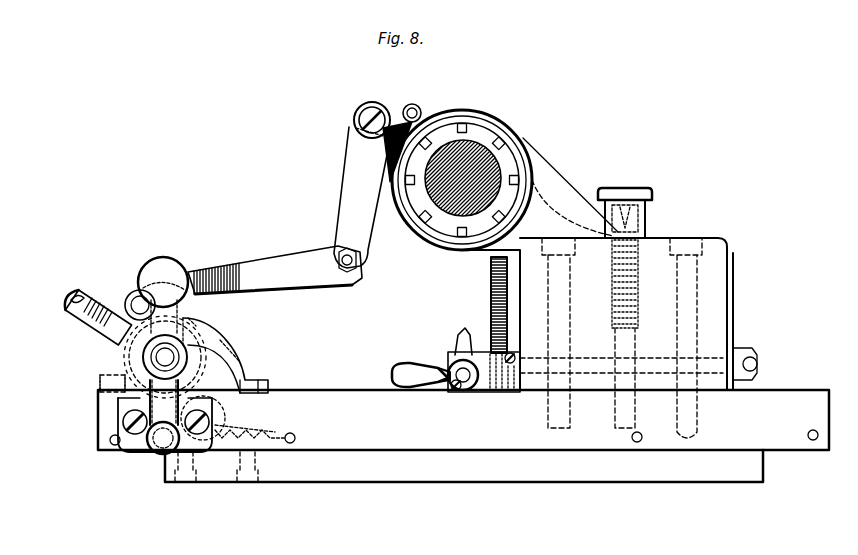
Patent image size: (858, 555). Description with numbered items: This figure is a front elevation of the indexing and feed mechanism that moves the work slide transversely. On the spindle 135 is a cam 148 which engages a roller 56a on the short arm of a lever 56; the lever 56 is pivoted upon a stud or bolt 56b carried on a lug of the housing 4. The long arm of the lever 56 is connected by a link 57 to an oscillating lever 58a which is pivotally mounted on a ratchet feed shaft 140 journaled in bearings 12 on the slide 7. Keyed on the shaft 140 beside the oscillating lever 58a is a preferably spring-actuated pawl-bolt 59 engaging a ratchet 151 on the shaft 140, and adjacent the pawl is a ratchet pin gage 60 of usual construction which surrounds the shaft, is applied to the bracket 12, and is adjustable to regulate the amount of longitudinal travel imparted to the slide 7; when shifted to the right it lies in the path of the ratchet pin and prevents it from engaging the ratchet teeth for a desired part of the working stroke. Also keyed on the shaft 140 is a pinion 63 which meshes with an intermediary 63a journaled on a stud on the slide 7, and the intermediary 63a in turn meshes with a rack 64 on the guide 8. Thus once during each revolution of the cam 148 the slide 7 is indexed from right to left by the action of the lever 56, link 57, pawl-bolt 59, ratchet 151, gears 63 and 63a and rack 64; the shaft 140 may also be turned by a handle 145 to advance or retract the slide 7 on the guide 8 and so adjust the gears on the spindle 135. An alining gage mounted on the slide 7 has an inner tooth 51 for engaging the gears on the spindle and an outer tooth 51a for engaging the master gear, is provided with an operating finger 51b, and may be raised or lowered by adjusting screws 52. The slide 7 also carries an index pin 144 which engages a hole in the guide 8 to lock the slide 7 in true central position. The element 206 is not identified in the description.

The housing 4 is at (527, 146).
The slide 7 is at (463, 420).
The guide 8 is at (462, 484).
The bearings 12 is at (147, 397).
The inner tooth 51 is at (473, 328).
The outer tooth 51a is at (460, 384).
The operating finger 51b is at (407, 367).
The adjusting screws 52 is at (493, 272).
The lever 56 is at (352, 185).
The roller 56a is at (416, 106).
The stud or bolt 56b is at (352, 116).
The link 57 is at (263, 271).
The oscillating lever 58a is at (132, 294).
The pawl-bolt 59 is at (92, 320).
The ratchet pin gage 60 is at (110, 378).
The pinion 63 is at (212, 337).
The intermediary 63a is at (232, 414).
The rack 64 is at (275, 432).
The spindle 135 is at (453, 207).
The ratchet feed shaft 140 is at (158, 357).
The index pin 144 is at (617, 408).
The handle 145 is at (153, 454).
The cam 148 is at (418, 118).
The ratchet 151 is at (200, 337).
The screw 206 is at (512, 158).